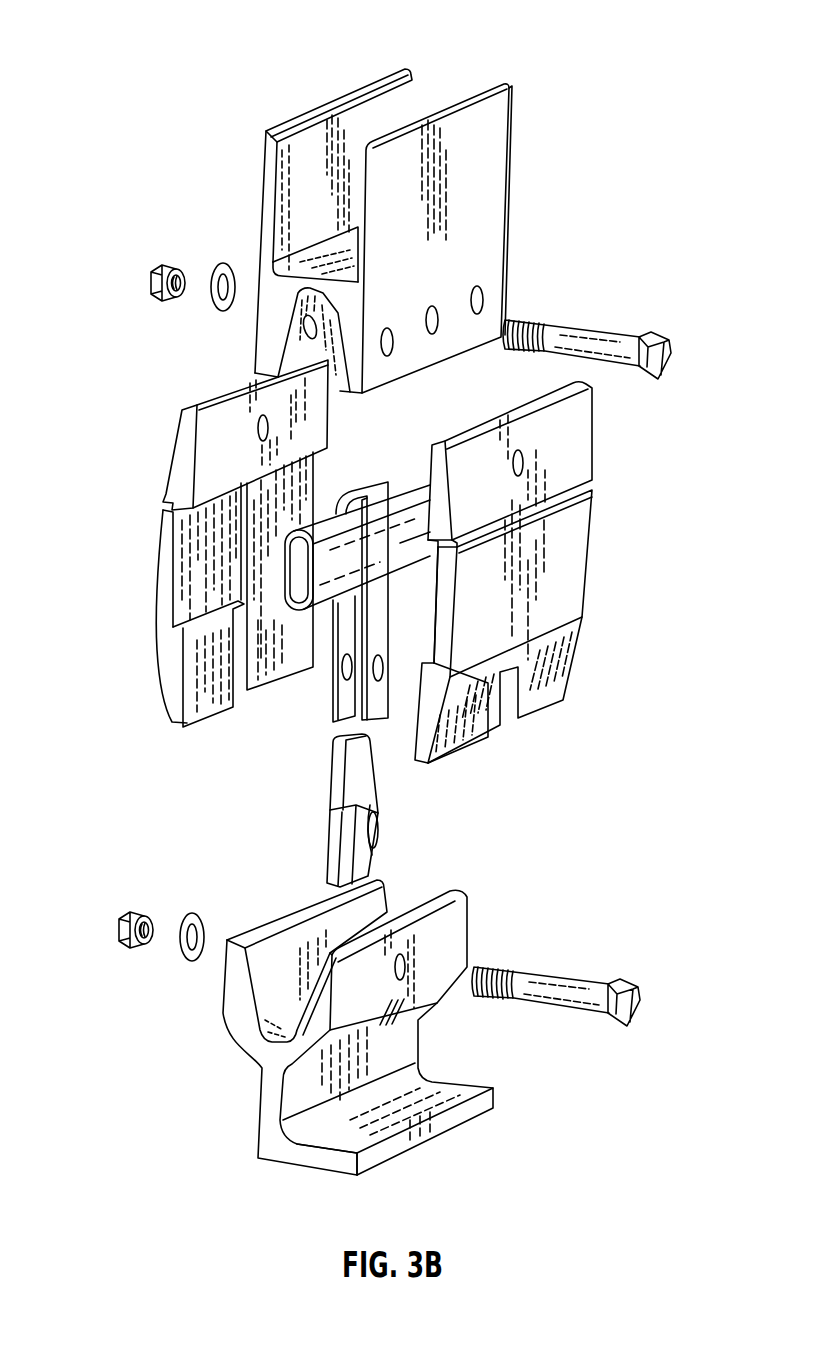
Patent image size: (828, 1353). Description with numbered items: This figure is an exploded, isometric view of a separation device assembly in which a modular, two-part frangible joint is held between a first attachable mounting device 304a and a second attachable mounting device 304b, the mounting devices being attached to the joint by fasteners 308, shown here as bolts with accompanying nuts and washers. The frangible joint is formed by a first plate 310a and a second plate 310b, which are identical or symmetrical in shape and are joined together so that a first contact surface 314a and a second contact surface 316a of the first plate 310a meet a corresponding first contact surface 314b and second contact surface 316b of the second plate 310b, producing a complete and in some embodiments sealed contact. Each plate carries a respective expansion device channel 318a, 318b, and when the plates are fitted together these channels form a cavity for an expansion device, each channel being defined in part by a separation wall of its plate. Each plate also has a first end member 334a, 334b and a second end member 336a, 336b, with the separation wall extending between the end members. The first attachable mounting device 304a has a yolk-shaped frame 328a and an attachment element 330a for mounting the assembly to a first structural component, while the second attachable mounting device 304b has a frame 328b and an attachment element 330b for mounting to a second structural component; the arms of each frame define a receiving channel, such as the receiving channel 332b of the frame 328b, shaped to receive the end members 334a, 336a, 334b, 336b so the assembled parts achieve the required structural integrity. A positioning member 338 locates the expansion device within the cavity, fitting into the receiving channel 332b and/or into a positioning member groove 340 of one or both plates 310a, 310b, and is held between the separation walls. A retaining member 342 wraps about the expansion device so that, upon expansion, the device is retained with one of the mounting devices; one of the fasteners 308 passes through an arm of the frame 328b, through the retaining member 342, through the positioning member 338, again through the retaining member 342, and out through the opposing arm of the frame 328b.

The first attachable mounting device 304a is at (320, 98).
The second attachable mounting device 304b is at (258, 1178).
The fastener 308 is at (580, 328).
The first plate 310a is at (167, 580).
The second plate 310b is at (565, 605).
The first contact surface 314a is at (213, 418).
The first contact surface 314b is at (428, 458).
The second contact surface 316a is at (202, 704).
The second contact surface 316b is at (418, 736).
The expansion device channel 318a is at (190, 542).
The expansion device channel 318b is at (415, 642).
The frame 328a is at (273, 312).
The frame 328b is at (237, 990).
The attachment element 330a is at (262, 186).
The attachment element 330b is at (473, 1110).
The receiving channel 332b is at (318, 347).
The first end member 334a is at (180, 456).
The first end member 334b is at (567, 452).
The second end member 336a is at (176, 672).
The second end member 336b is at (562, 680).
The positioning member 338 is at (328, 846).
The positioning member groove 340 is at (240, 592).
The retaining member 342 is at (338, 704).